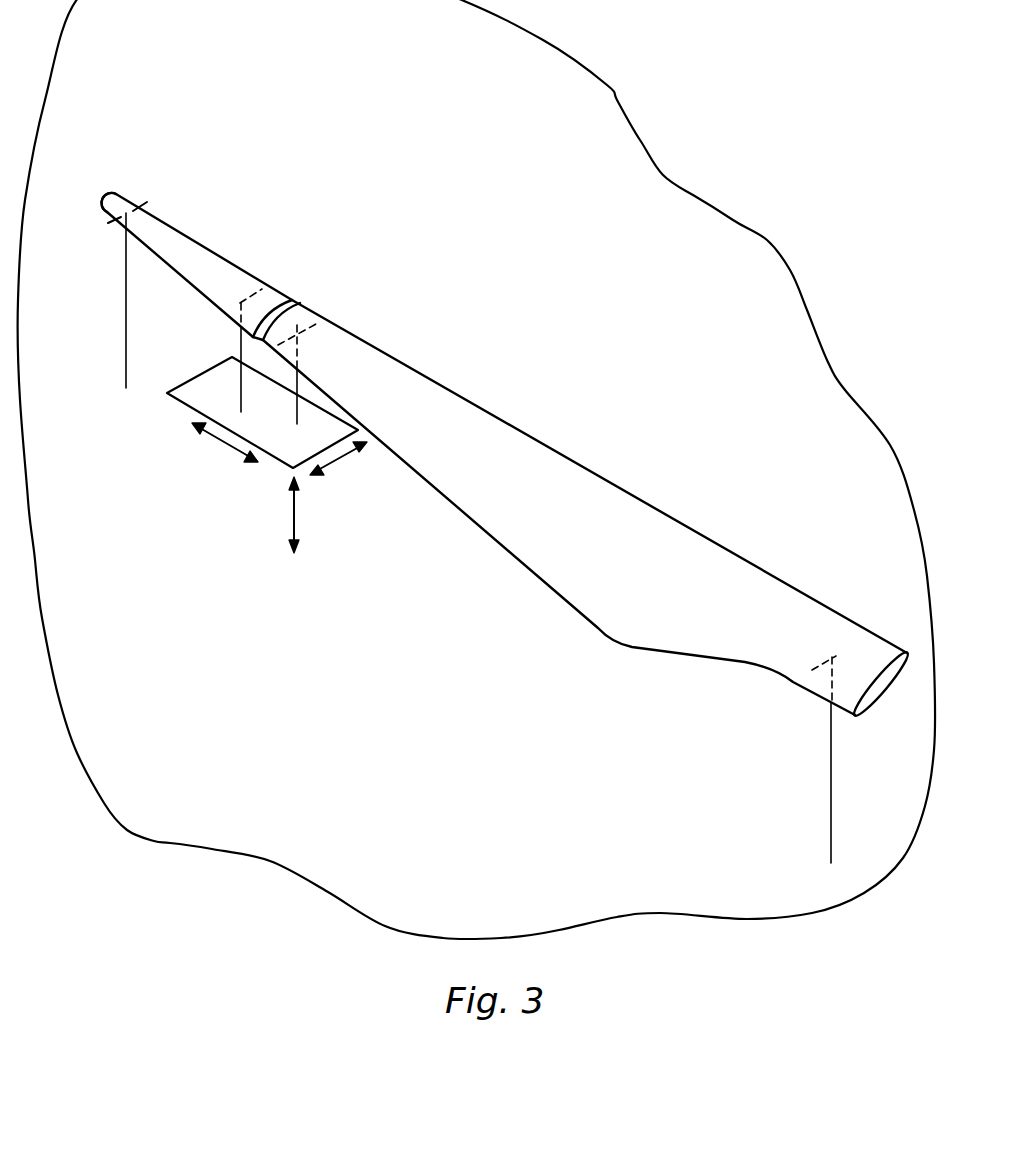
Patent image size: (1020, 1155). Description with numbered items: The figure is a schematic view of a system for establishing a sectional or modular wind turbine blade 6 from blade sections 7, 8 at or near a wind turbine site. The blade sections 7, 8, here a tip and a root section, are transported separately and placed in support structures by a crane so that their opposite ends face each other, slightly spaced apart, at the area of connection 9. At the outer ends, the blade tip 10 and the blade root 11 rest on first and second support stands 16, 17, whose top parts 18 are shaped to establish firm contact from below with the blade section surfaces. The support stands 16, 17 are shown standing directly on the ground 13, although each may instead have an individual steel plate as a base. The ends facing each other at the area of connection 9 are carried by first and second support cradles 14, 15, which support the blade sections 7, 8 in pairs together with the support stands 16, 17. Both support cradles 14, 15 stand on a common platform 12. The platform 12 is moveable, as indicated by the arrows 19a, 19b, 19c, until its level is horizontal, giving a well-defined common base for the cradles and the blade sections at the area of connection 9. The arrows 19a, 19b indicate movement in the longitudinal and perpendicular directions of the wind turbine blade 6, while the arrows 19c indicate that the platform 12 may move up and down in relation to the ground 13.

The wind turbine blade 6 is at (497, 364).
The blade section 7 is at (200, 245).
The blade section 8 is at (580, 463).
The area of connection 9 is at (297, 299).
The blade tip 10 is at (108, 199).
The blade root 11 is at (880, 640).
The platform 12 is at (190, 407).
The ground 13 is at (168, 843).
The first support cradle 14 is at (240, 345).
The second support cradle 15 is at (297, 370).
The first support stand 16 is at (127, 277).
The second support stand 17 is at (832, 748).
The top part 18 is at (850, 647).
The arrow 19a is at (233, 444).
The arrow 19b is at (352, 460).
The arrow 19c is at (294, 515).